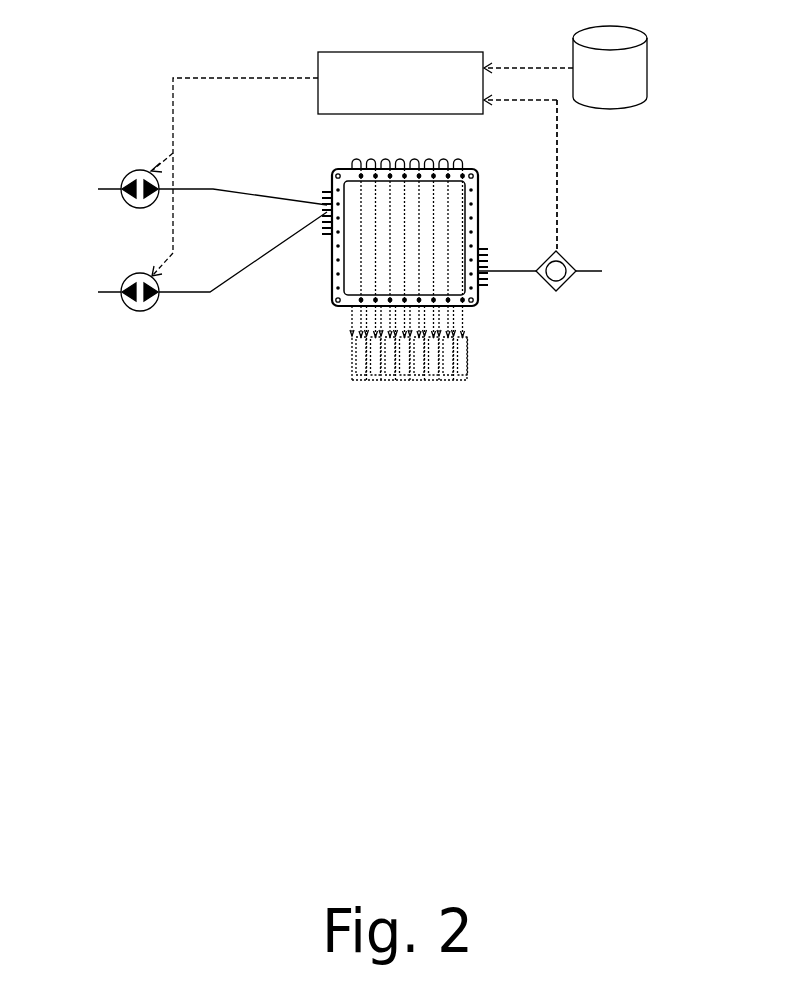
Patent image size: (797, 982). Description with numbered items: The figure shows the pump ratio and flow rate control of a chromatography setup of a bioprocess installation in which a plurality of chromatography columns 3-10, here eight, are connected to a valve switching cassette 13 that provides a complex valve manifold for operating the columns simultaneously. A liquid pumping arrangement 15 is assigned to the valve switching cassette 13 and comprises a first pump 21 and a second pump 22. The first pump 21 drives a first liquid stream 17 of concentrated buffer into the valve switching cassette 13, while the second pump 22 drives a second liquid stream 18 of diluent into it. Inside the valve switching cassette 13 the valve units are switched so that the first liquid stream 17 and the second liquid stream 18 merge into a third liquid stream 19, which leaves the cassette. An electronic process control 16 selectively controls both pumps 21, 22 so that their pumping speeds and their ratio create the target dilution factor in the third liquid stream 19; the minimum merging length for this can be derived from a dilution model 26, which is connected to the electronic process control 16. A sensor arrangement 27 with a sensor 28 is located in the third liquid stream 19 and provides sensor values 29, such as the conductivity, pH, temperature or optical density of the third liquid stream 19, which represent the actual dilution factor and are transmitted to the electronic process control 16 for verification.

The valve switching cassette 13 is at (478, 171).
The liquid pumping arrangement 15 is at (115, 172).
The electronic process control 16 is at (384, 98).
The first liquid stream 17 is at (200, 189).
The second liquid stream 18 is at (187, 292).
The third liquid stream 19 is at (507, 271).
The first pump 21 is at (133, 170).
The second pump 22 is at (128, 313).
The dilution model 26 is at (594, 93).
The sensor arrangement 27 is at (641, 245).
The sensor 28 is at (565, 260).
The sensor values 29 is at (557, 190).
The chromatography columns 3-10 is at (355, 393).